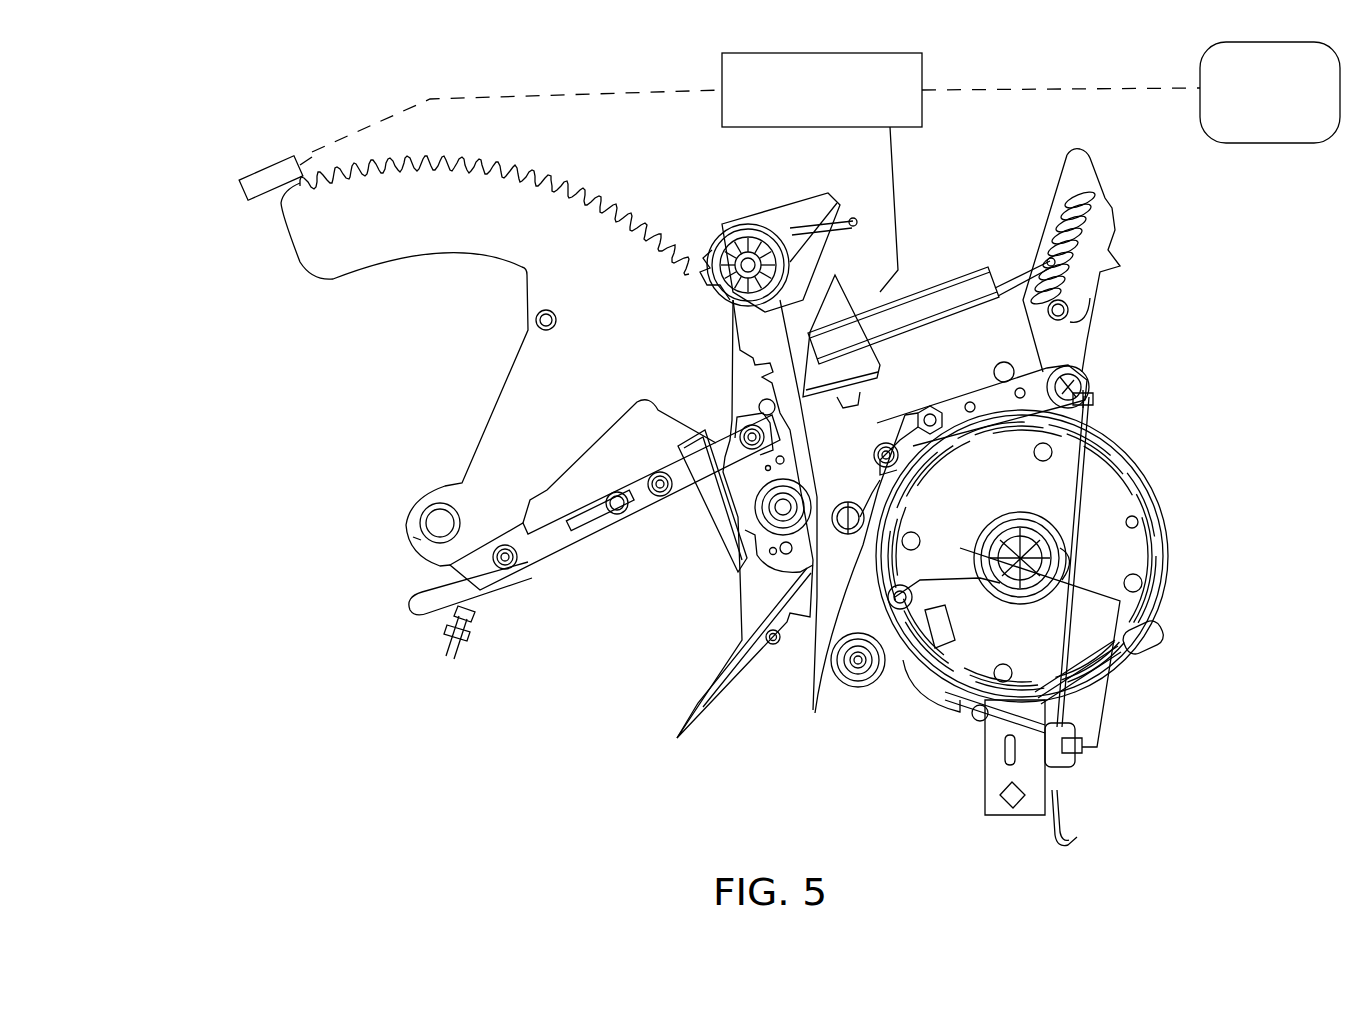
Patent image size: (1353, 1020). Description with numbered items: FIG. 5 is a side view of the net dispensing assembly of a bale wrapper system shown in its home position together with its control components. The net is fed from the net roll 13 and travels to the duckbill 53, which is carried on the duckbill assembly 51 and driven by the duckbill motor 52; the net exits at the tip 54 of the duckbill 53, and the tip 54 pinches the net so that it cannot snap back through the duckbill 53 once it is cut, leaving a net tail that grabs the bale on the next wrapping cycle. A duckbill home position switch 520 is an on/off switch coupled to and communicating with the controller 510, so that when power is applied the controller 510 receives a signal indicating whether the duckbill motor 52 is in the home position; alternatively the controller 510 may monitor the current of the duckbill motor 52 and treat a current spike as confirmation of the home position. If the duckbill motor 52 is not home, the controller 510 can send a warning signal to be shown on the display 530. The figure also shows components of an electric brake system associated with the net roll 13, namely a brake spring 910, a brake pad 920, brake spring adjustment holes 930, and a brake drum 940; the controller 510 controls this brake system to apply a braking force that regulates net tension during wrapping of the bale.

The controller 510 is at (961, 172).
The display 530 is at (1270, 92).
The duckbill home position switch 520 is at (243, 192).
The duckbill assembly 51 is at (590, 232).
The duckbill motor 52 is at (830, 300).
The brake spring 910 is at (948, 283).
The brake spring adjustment holes 930 is at (1118, 270).
The brake drum 940 is at (1156, 497).
The net roll 13 is at (1117, 559).
The brake pad 920 is at (874, 490).
The duckbill 53 is at (738, 660).
The tip 54 is at (682, 744).